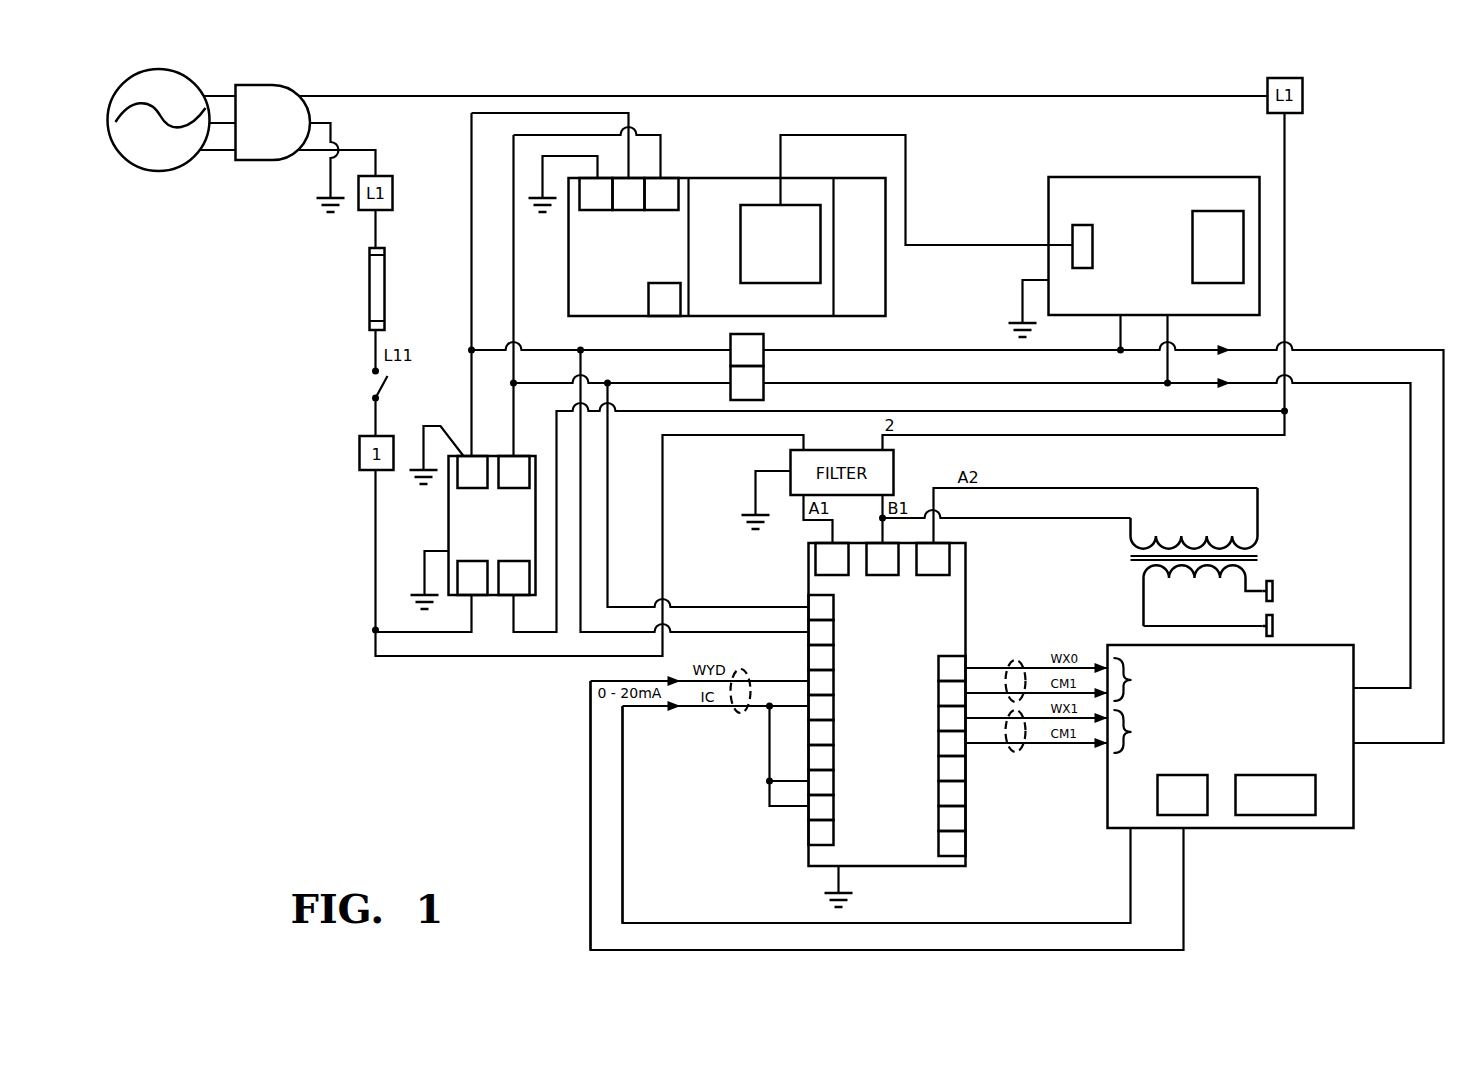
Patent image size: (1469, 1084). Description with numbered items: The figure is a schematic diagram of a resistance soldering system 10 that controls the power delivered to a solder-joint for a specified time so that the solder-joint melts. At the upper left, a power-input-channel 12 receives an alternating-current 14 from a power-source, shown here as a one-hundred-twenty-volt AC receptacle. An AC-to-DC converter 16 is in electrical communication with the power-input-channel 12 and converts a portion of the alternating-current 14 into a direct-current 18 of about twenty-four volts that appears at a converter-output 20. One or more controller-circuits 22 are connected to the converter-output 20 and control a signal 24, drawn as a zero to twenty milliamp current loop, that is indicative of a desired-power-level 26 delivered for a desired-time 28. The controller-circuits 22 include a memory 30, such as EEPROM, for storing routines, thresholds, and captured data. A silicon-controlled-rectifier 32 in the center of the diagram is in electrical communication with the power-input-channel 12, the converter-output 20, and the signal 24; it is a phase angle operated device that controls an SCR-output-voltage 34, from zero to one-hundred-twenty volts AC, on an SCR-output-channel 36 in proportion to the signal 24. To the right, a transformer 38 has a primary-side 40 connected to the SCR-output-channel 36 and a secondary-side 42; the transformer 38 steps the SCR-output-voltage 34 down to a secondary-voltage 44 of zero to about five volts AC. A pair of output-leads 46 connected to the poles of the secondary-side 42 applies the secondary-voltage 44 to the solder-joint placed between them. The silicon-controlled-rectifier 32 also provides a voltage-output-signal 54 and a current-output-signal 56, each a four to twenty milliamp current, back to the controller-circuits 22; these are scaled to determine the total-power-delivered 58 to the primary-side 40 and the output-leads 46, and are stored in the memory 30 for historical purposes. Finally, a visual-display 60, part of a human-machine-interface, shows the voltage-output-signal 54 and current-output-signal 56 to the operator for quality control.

The resistance soldering system 10 is at (1357, 105).
The power-input-channel 12 is at (275, 157).
The alternating-current 14 is at (138, 172).
The AC-to-DC converter 16 is at (448, 538).
The direct-current 18 is at (512, 490).
The converter-output 20 is at (513, 385).
The controller-circuits 22 is at (720, 180).
The signal 24 is at (738, 717).
The desired-power-level 26 is at (695, 815).
The desired-time 28 is at (753, 815).
The memory 30 is at (1295, 817).
The silicon-controlled-rectifier 32 is at (920, 868).
The SCR-output-voltage 34 is at (1130, 522).
The SCR-output-channel 36 is at (883, 574).
The transformer 38 is at (1222, 559).
The primary-side 40 is at (1257, 500).
The secondary-side 42 is at (1247, 578).
The secondary-voltage 44 is at (1317, 600).
The pair of output-leads 46 is at (1310, 626).
The voltage-output-signal 54 is at (1010, 753).
The current-output-signal 56 is at (1023, 661).
The total-power-delivered 58 is at (1197, 817).
The visual-display 60 is at (1237, 252).